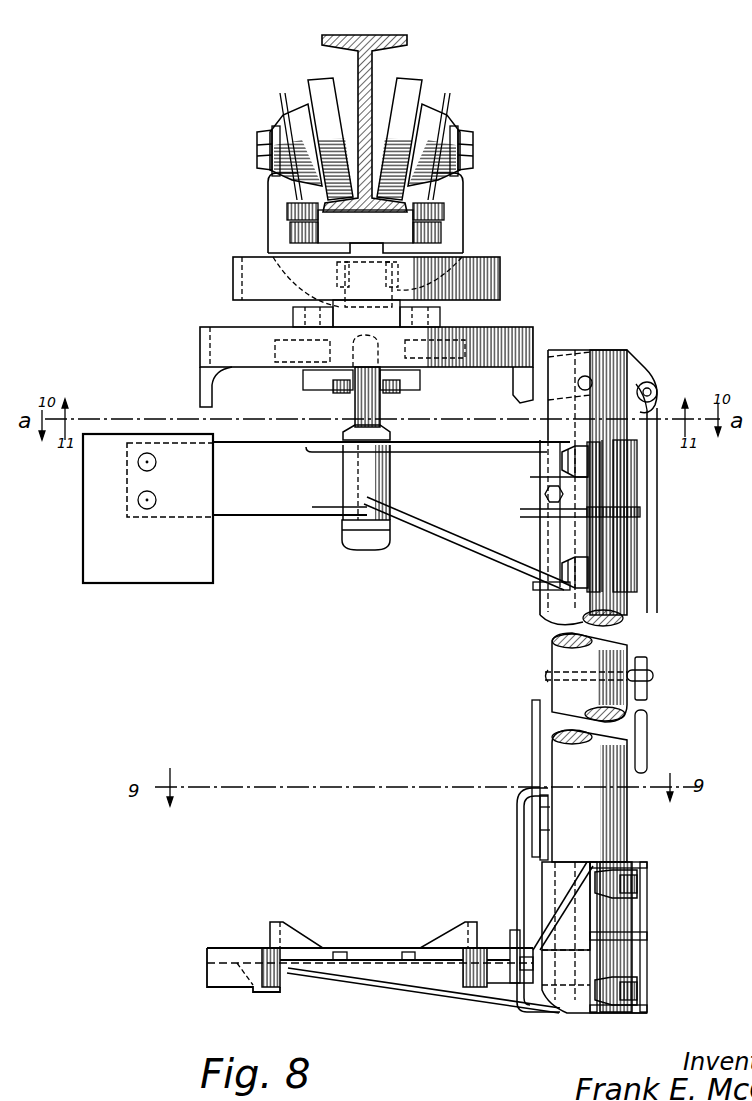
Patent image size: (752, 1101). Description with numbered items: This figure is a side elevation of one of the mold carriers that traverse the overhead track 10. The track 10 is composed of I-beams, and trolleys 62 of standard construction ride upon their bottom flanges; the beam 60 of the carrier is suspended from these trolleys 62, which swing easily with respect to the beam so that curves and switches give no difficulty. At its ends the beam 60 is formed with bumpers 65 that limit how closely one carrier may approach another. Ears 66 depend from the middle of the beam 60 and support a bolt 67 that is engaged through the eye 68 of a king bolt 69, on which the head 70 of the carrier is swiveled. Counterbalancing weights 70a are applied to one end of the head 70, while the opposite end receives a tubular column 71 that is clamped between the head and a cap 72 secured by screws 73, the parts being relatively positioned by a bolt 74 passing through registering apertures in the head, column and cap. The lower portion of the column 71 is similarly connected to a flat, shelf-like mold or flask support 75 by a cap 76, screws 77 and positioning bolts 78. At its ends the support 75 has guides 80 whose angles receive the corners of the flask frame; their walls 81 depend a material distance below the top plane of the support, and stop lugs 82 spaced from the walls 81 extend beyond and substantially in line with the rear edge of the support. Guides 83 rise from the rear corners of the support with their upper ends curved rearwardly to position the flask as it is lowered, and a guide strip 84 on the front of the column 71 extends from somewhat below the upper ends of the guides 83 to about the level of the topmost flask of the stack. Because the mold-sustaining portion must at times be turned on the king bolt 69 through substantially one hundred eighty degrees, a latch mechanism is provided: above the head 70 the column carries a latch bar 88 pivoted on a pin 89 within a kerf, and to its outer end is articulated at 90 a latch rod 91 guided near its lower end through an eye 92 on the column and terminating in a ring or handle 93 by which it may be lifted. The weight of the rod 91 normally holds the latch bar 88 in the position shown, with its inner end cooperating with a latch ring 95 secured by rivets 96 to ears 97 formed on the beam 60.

The track 10 is at (400, 33).
The trolleys 62 is at (258, 155).
The beam 60 is at (343, 308).
The bumpers 65 is at (500, 273).
The ears 97 is at (293, 318).
The latch ring 95 is at (233, 337).
The rivets 96 is at (313, 343).
The bolt 67 is at (308, 373).
The ears 66 is at (340, 383).
The eye 68 is at (380, 400).
The counterbalancing weights 70a is at (202, 562).
The king bolt 69 is at (370, 548).
The head 70 is at (475, 527).
The bolt 74 is at (545, 494).
The latch bar 88 is at (633, 380).
The pin 89 is at (587, 376).
The articulation 90 is at (657, 387).
The latch rod 91 is at (657, 527).
The cap 72 is at (618, 495).
The screws 73 is at (633, 467).
The tubular column 71 is at (617, 652).
The eye 92 is at (653, 675).
The ring or handle 93 is at (640, 740).
The guide strip 84 is at (533, 753).
The guides 83 is at (520, 848).
The cap 76 is at (637, 910).
The screws 77 is at (637, 880).
The positioning bolts 78 is at (537, 912).
The mold or flask support 75 is at (233, 947).
The walls 81 is at (272, 987).
The guides 80 is at (300, 948).
The stop lugs 82 is at (515, 990).